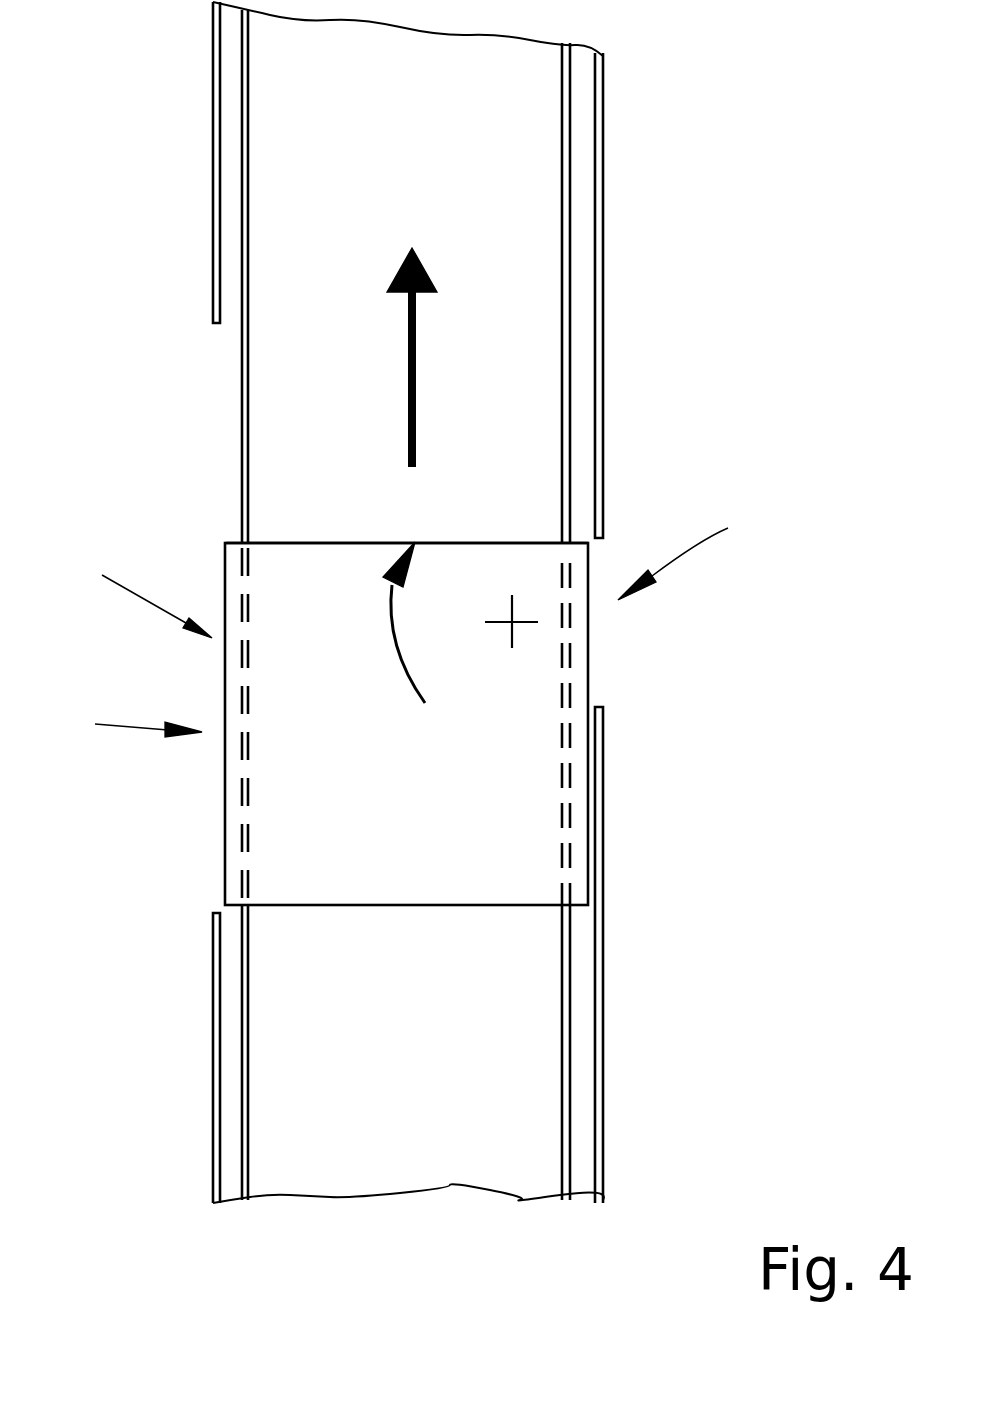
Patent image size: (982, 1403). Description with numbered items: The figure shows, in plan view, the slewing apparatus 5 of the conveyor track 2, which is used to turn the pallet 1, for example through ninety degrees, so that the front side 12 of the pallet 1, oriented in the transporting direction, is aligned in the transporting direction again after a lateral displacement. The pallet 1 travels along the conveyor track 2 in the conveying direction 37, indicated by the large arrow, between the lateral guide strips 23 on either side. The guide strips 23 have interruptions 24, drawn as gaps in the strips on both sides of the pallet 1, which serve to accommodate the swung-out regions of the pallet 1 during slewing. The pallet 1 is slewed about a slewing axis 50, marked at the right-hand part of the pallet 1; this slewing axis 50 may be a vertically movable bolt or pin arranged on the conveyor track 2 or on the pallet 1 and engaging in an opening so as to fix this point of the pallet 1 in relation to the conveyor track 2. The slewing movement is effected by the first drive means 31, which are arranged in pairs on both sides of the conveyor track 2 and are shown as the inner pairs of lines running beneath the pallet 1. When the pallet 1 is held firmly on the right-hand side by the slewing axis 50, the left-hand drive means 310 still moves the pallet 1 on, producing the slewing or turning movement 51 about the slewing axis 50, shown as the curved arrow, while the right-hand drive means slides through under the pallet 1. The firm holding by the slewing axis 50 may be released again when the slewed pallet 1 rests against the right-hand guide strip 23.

The pallet 1 is at (357, 653).
The conveyor track 2 is at (338, 605).
The slewing apparatus 5 is at (132, 720).
The front side 12 is at (287, 545).
The lateral guide strips 23 is at (214, 238).
The interruptions 24 is at (420, 571).
The first drive means 31 is at (243, 955).
The conveying direction 37 is at (408, 363).
The slewing axis 50 is at (527, 624).
The slewing or turning movement 51 is at (390, 633).
The left-hand drive means 310 is at (250, 1043).